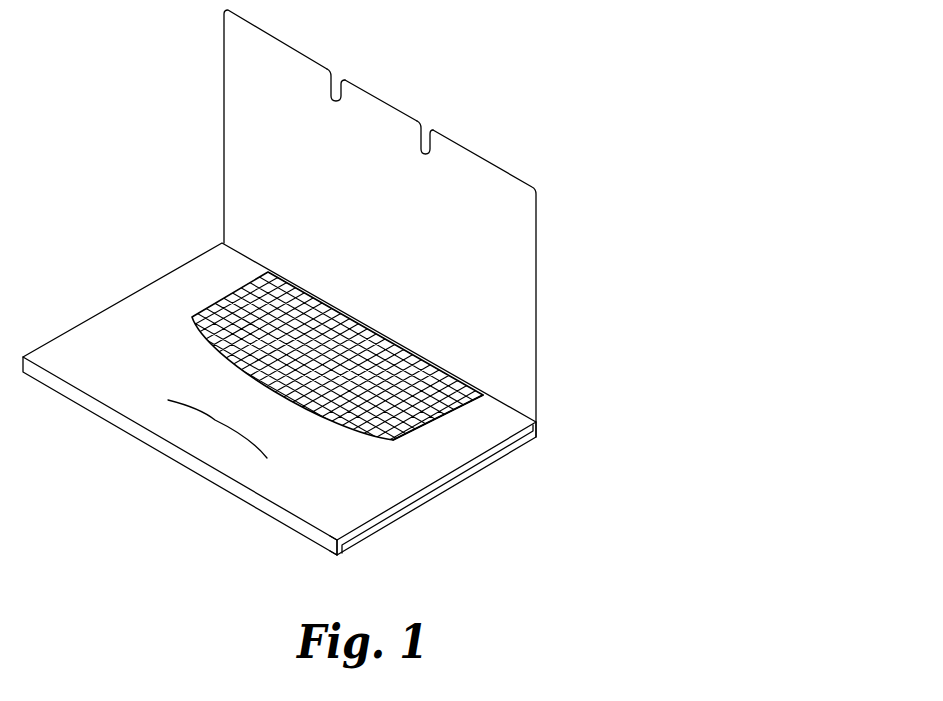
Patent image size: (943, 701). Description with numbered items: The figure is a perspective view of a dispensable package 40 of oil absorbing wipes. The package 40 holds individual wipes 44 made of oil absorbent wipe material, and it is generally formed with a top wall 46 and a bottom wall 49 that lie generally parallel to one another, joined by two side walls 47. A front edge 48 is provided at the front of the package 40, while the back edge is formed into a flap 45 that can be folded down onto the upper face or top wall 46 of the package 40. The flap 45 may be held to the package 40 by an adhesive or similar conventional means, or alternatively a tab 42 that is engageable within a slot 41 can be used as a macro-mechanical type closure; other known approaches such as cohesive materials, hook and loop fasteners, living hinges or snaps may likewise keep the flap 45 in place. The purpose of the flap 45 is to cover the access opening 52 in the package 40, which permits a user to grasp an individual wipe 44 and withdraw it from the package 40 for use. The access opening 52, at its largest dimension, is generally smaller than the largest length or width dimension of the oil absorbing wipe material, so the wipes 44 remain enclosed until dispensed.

The dispensable package 40 is at (140, 160).
The slot 41 is at (215, 420).
The tab 42 is at (382, 113).
The individual wipes 44 is at (382, 357).
The flap 45 is at (525, 282).
The top wall 46 is at (300, 512).
The side walls 47 is at (125, 298).
The front edge 48 is at (215, 480).
The bottom wall 49 is at (355, 545).
The access opening 52 is at (433, 415).